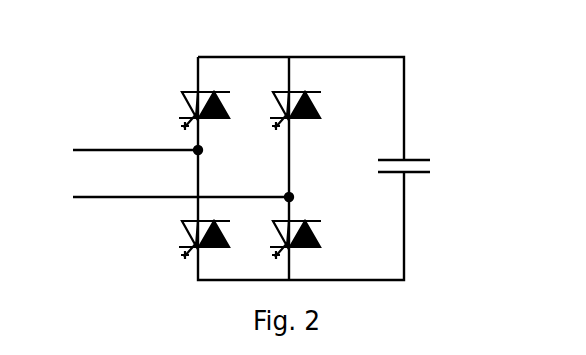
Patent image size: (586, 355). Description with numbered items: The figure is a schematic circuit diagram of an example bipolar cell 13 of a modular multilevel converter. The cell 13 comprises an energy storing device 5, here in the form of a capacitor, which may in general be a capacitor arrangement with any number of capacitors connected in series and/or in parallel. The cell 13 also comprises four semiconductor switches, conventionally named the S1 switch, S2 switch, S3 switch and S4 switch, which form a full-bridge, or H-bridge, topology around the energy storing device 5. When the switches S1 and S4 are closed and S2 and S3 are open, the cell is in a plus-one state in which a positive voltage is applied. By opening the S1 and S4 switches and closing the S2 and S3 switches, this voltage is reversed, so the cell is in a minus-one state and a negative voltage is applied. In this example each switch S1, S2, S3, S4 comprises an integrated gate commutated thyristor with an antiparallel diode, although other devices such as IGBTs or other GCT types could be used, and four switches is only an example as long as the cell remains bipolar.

The bipolar cell 13 is at (449, 72).
The energy storing device 5 is at (412, 172).
The S1 switch S1 is at (180, 111).
The S2 switch S2 is at (180, 240).
The S3 switch S3 is at (316, 111).
The S4 switch S4 is at (316, 240).